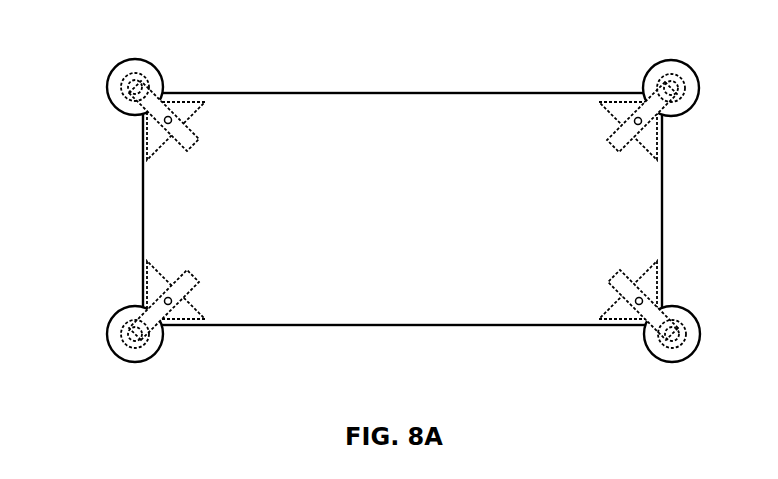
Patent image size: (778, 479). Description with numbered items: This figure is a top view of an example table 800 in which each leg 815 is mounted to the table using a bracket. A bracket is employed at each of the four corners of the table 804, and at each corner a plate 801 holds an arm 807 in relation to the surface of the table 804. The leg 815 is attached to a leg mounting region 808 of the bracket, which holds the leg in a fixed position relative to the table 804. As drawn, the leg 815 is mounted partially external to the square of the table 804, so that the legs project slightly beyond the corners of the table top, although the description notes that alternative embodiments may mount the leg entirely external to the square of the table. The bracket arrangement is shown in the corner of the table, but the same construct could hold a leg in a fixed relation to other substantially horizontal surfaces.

The table 800 is at (92, 50).
The plate 801 is at (157, 287).
The table 804 is at (392, 212).
The arm 807 is at (160, 312).
The leg mounting region 808 is at (129, 333).
The leg 815 is at (153, 353).